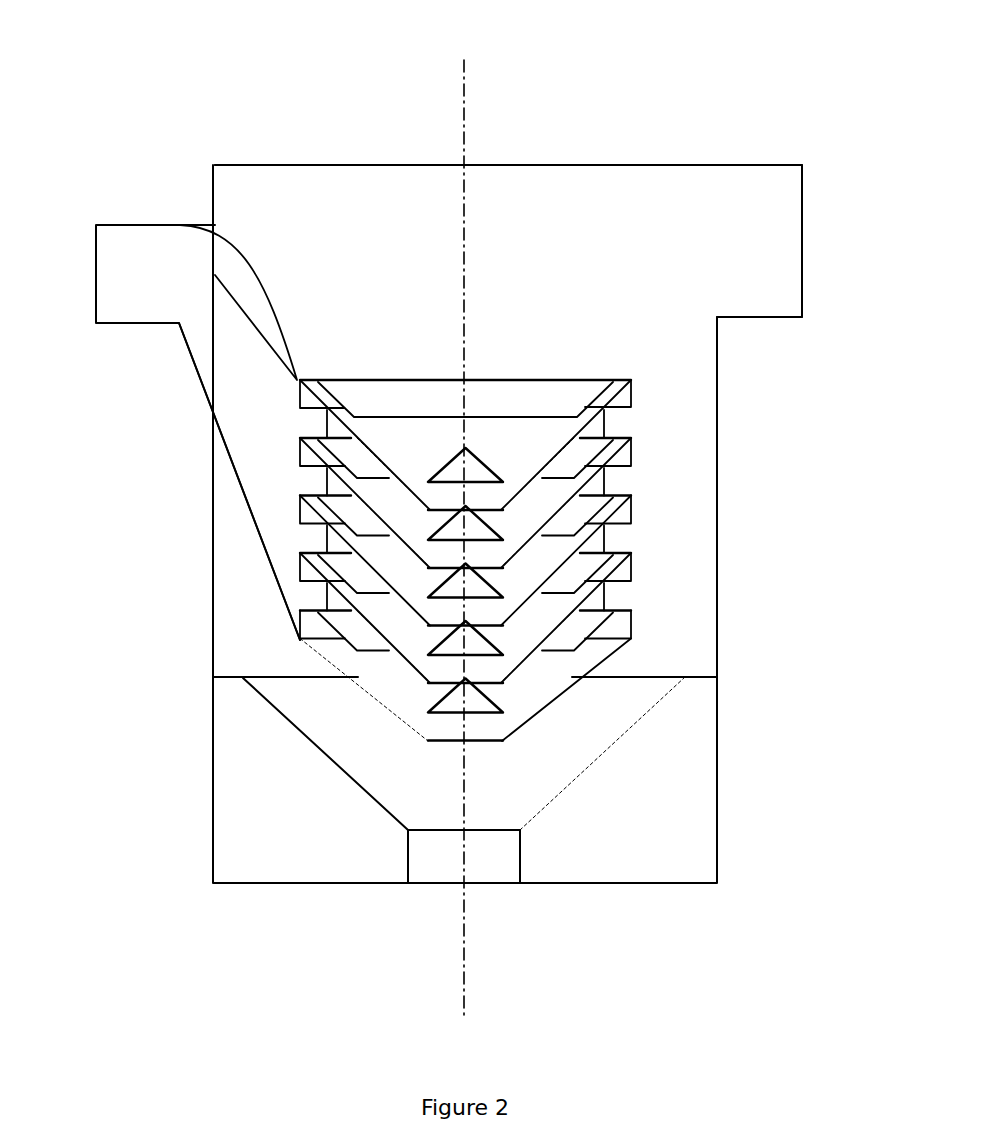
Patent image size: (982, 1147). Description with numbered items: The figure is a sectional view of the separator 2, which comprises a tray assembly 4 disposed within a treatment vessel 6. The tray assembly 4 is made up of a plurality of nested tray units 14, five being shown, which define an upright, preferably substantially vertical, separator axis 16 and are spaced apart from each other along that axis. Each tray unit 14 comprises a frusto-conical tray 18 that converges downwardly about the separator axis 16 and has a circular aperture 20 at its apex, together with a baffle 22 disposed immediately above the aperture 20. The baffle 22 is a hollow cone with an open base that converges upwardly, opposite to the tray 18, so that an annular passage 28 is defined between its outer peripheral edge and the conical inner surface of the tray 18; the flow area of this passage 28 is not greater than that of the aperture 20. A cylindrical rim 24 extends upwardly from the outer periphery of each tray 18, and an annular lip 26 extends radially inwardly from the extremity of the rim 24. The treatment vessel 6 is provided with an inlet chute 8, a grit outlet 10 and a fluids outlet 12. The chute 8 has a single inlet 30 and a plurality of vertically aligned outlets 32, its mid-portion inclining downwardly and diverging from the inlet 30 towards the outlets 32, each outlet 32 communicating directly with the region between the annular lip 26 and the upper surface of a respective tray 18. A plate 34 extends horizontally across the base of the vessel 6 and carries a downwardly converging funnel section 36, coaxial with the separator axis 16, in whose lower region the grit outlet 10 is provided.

The separator 2 is at (233, 128).
The tray assembly 4 is at (650, 491).
The treatment vessel 6 is at (213, 580).
The inlet chute 8 is at (250, 399).
The grit outlet 10 is at (482, 865).
The fluids outlet 12 is at (762, 222).
The tray unit 14 is at (538, 432).
The separator axis 16 is at (478, 110).
The frusto-conical tray 18 is at (400, 481).
The circular aperture 20 is at (490, 513).
The baffle 22 is at (448, 465).
The cylindrical rim 24 is at (633, 392).
The annular lip 26 is at (595, 395).
The annular passage 28 is at (513, 482).
The inlet 30 is at (110, 280).
The outlets 32 is at (313, 393).
The plate 34 is at (715, 663).
The funnel section 36 is at (310, 742).